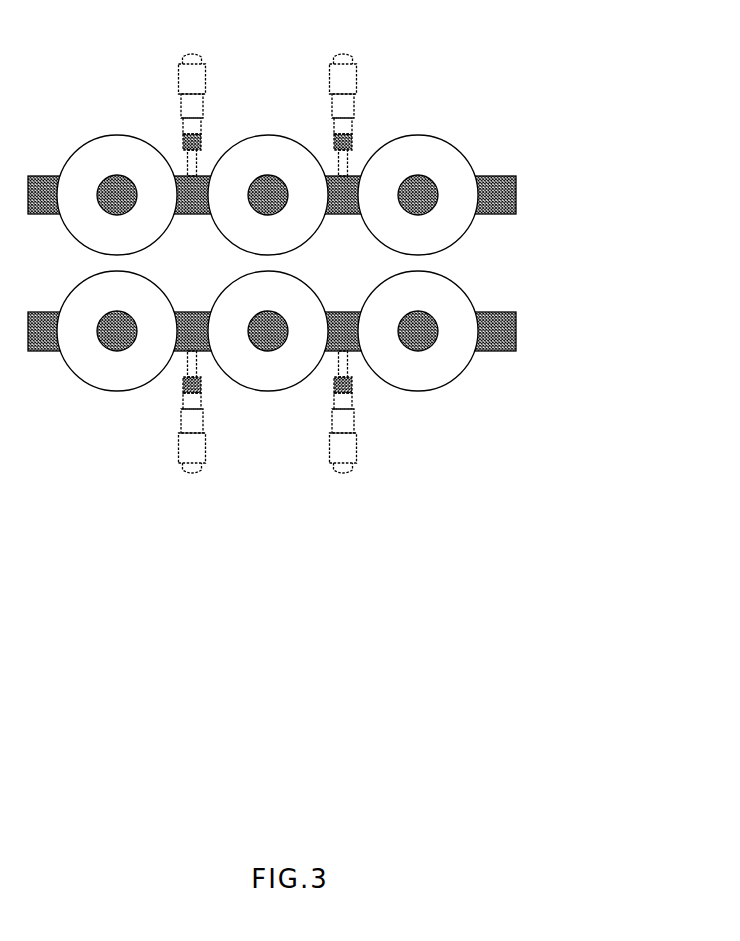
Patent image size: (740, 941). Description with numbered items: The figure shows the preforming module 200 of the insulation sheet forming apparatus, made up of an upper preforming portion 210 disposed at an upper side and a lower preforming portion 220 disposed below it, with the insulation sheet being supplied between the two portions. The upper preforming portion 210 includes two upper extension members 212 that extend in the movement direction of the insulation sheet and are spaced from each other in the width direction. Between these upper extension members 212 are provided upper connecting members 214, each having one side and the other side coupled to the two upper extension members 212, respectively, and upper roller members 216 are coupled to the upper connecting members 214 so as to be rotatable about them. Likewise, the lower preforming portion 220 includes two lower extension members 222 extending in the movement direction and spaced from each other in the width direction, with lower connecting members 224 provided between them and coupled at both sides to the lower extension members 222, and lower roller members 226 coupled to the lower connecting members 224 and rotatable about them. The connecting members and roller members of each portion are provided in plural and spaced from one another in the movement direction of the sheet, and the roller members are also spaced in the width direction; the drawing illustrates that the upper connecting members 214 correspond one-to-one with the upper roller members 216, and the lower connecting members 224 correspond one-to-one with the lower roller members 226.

The preforming module 200 is at (347, 258).
The upper preforming portion 210 is at (319, 139).
The upper extension member 212 is at (487, 176).
The upper connecting member 214 is at (111, 190).
The upper roller member 216 is at (258, 153).
The lower preforming portion 220 is at (319, 344).
The lower extension member 222 is at (490, 352).
The lower connecting member 224 is at (413, 343).
The lower roller member 226 is at (283, 380).